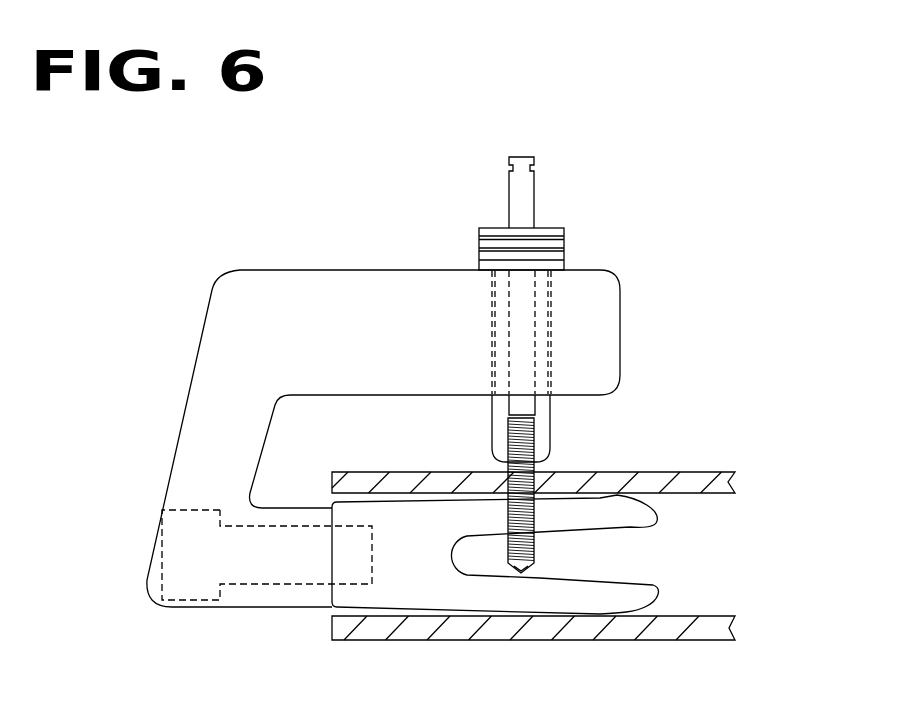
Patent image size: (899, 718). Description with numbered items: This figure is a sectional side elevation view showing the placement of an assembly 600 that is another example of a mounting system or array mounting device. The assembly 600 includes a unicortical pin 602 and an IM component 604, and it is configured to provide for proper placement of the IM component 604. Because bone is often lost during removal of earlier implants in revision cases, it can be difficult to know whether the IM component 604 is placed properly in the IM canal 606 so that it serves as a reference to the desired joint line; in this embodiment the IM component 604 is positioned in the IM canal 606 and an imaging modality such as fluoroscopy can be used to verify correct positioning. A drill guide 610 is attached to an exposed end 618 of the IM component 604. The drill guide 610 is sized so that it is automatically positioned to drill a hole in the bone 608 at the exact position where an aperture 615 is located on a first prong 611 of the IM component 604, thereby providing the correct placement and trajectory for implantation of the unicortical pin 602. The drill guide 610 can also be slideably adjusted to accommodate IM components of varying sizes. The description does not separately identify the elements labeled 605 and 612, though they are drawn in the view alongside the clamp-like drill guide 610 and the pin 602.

The assembly 600 is at (578, 196).
The unicortical pin 602 is at (509, 196).
The IM component 604 is at (620, 600).
The upper leg of clip 605 is at (540, 487).
The IM canal 606 is at (694, 574).
The bone 608 is at (690, 618).
The drill guide 610 is at (620, 327).
The first prong 611 is at (614, 503).
The slide member 612 is at (330, 532).
The aperture 615 is at (508, 487).
The exposed end 618 is at (306, 626).